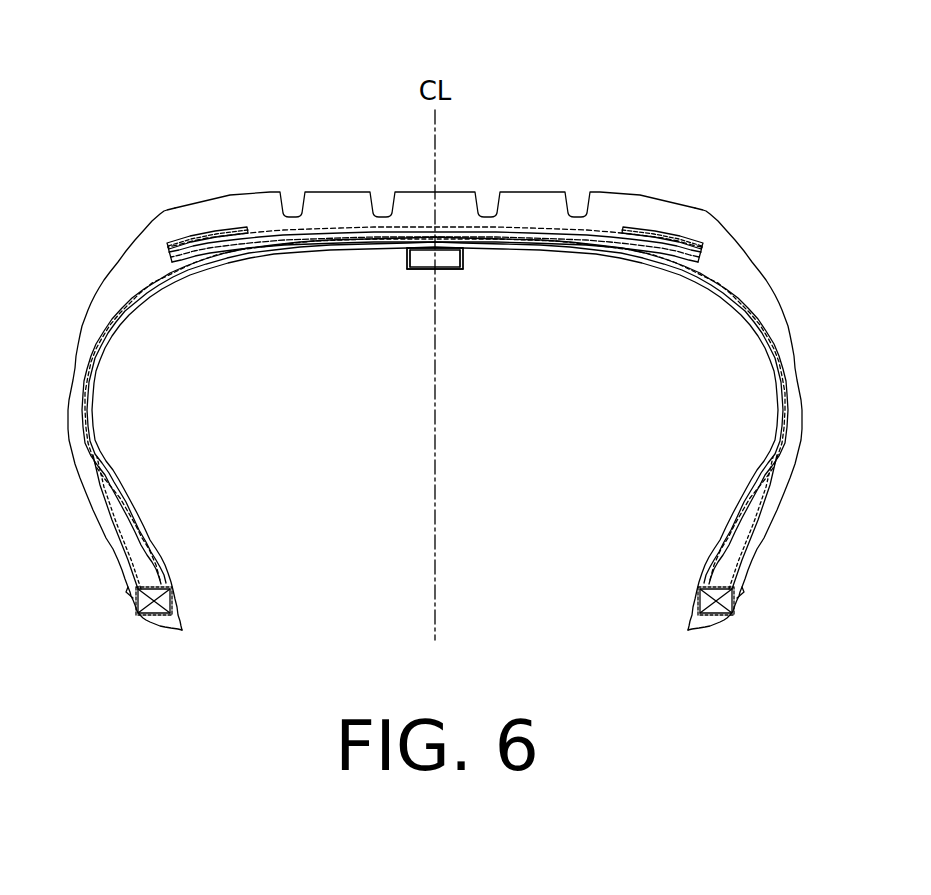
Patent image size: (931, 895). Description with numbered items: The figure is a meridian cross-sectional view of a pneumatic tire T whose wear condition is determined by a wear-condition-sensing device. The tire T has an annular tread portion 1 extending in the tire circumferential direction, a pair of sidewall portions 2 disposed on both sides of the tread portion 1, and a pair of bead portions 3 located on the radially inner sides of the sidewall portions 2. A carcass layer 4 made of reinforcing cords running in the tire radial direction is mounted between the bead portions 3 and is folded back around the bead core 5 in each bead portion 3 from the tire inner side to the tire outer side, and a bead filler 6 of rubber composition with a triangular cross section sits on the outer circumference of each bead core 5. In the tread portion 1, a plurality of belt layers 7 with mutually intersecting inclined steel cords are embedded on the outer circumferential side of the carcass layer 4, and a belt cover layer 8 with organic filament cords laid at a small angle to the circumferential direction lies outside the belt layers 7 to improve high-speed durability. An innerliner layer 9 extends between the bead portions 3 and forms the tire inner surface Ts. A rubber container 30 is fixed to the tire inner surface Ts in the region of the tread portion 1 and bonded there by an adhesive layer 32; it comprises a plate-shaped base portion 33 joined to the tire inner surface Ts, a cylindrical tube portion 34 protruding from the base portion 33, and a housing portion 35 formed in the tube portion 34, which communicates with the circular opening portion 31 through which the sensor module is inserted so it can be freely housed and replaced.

The tire T is at (316, 103).
The tread portion 1 is at (472, 180).
The sidewall portion 2 is at (73, 346).
The bead portion 3 is at (122, 601).
The carcass layer 4 is at (124, 302).
The bead core 5 is at (173, 600).
The bead filler 6 is at (150, 568).
The belt layer 7 is at (585, 244).
The belt cover layer 8 is at (235, 234).
The innerliner layer 9 is at (772, 388).
The tire inner surface Ts is at (613, 248).
The container 30 is at (431, 317).
The opening portion 31 is at (440, 272).
The adhesive layer 32 is at (406, 264).
The base portion 33 is at (406, 251).
The tube portion 34 is at (465, 254).
The housing portion 35 is at (459, 264).